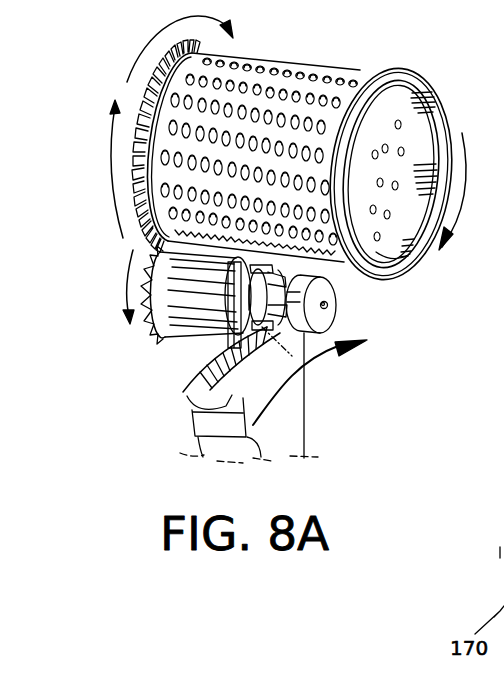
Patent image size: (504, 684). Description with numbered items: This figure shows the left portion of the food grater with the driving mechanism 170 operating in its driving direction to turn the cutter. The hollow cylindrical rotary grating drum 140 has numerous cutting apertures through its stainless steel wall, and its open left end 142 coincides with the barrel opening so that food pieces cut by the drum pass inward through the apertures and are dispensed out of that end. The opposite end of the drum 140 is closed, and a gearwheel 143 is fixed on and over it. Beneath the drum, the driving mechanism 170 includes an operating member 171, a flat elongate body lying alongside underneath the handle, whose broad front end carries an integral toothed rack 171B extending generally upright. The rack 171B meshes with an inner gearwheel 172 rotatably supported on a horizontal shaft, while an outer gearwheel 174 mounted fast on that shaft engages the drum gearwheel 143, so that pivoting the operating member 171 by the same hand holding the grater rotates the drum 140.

The rotary grating drum 140 is at (286, 70).
The open left end 142 is at (426, 104).
The gearwheel 143 is at (143, 103).
The driving mechanism 170 is at (93, 432).
The operating member 171 is at (288, 434).
The toothed rack 171B is at (188, 388).
The inner gearwheel 172 is at (270, 327).
The outer gearwheel 174 is at (152, 336).